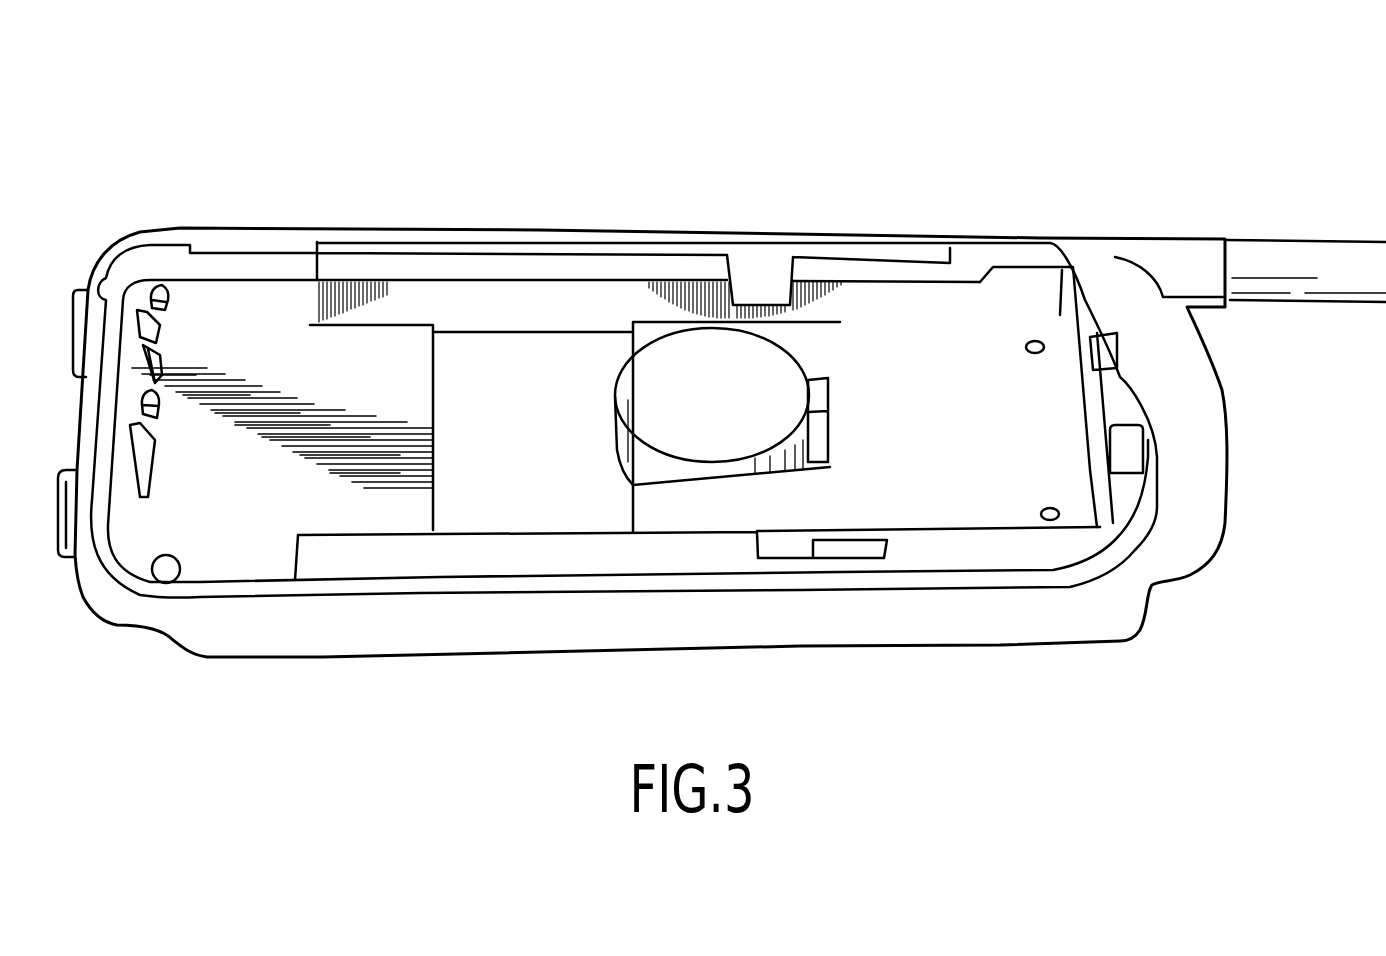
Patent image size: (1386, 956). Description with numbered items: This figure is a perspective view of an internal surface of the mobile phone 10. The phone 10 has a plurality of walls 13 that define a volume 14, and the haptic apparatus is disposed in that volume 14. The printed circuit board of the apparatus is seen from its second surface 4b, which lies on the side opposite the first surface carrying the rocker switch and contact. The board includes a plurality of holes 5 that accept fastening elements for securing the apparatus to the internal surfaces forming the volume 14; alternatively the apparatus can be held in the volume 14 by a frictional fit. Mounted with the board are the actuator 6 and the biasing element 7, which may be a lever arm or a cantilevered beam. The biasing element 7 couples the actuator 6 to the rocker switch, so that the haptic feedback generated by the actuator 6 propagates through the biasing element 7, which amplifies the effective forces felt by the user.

The mobile phone 10 is at (1060, 156).
The walls 13 is at (352, 636).
The volume 14 is at (558, 300).
The second surface 4b is at (866, 347).
The holes 5 is at (1036, 341).
The actuator 6 is at (643, 393).
The biasing element 7 is at (826, 420).